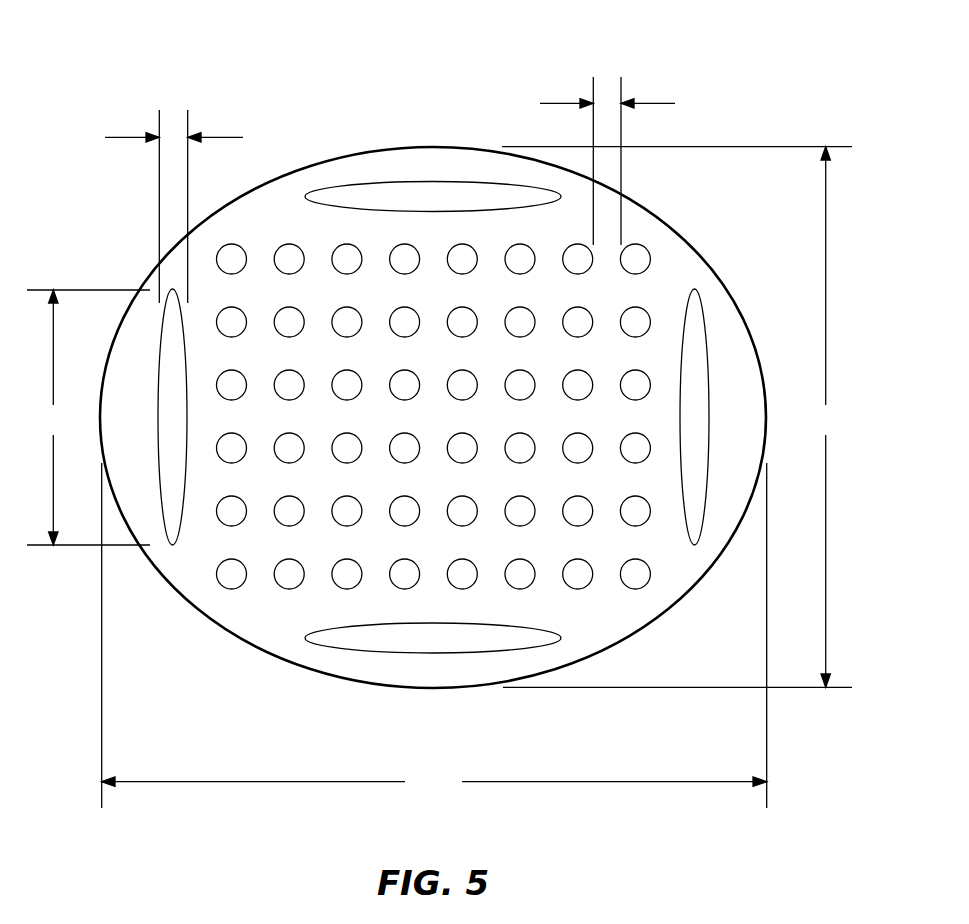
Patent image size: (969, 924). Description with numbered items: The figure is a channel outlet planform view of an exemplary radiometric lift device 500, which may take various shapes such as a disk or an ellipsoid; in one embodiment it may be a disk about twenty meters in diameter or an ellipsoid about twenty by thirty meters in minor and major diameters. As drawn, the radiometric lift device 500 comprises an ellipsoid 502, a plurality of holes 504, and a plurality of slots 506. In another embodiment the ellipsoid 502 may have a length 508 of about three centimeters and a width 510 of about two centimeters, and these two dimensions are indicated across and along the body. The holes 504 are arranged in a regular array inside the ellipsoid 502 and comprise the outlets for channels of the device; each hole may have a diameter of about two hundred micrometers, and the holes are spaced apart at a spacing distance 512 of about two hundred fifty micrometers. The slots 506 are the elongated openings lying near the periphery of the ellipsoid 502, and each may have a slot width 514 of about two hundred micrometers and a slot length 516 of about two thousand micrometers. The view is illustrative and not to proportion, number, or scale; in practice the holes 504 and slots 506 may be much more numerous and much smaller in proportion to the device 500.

The radiometric lift device 500 is at (270, 36).
The ellipsoid 502 is at (411, 133).
The holes 504 is at (231, 233).
The slots 506 is at (171, 560).
The length 508 is at (434, 635).
The width 510 is at (677, 417).
The spacing distance 512 is at (607, 146).
The slot width 514 is at (174, 194).
The slot length 516 is at (88, 417).